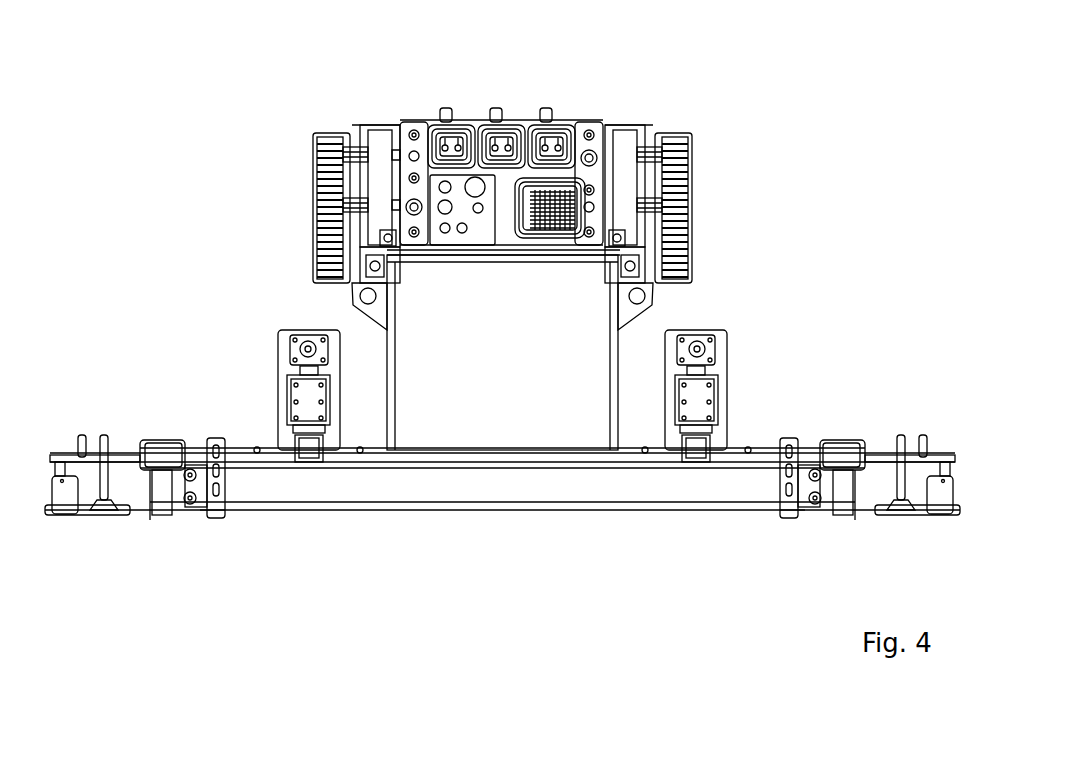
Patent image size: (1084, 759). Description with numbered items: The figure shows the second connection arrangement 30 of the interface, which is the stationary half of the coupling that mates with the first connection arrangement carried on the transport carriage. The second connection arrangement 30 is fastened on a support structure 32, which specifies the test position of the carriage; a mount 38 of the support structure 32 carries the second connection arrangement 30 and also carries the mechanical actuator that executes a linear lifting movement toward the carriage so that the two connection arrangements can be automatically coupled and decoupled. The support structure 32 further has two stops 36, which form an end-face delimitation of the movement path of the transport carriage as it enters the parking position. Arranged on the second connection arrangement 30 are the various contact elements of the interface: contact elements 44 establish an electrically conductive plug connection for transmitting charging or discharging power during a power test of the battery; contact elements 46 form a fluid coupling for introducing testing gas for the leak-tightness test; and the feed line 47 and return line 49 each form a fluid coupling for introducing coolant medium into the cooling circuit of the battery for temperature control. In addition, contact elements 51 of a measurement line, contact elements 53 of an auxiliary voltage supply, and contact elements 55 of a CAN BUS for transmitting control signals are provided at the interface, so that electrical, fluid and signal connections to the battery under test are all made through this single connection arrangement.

The second connection arrangement 30 is at (417, 118).
The support structure 32 is at (237, 452).
The stops 36 is at (306, 400).
The mount 38 is at (605, 350).
The contact elements 44 is at (548, 120).
The contact elements 46 is at (498, 122).
The feed line 47 is at (482, 206).
The return line 49 is at (466, 226).
The contact elements of a measurement line 51 is at (445, 232).
The contact elements of an auxiliary voltage supply 53 is at (452, 162).
The contact elements of a CAN BUS 55 is at (535, 238).